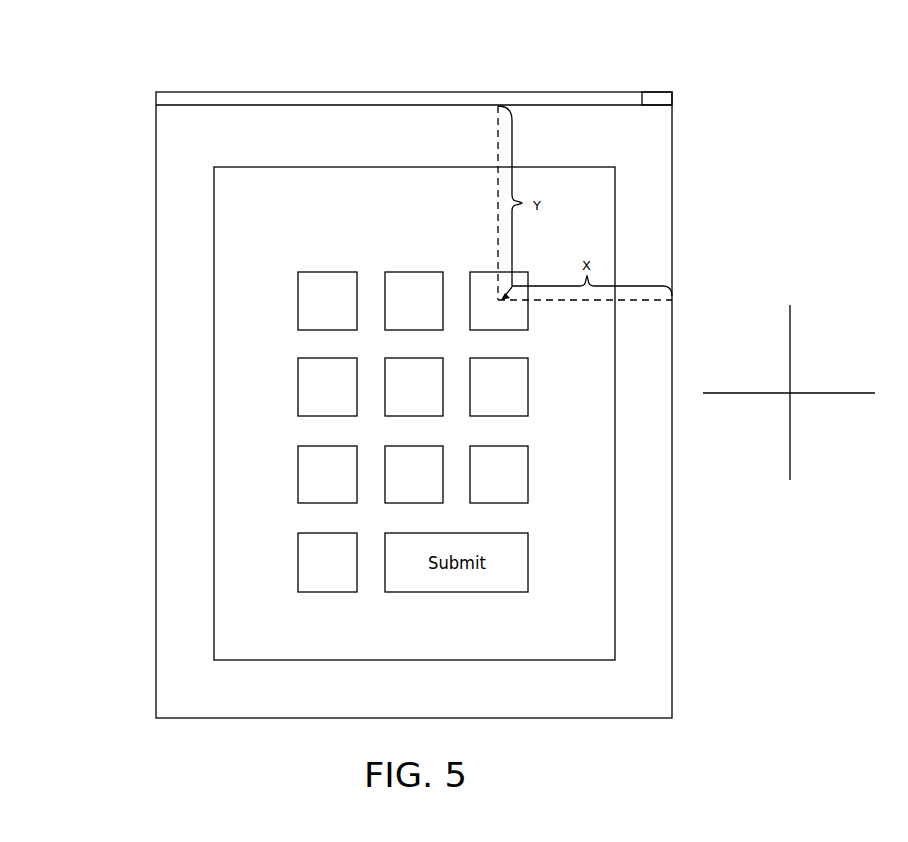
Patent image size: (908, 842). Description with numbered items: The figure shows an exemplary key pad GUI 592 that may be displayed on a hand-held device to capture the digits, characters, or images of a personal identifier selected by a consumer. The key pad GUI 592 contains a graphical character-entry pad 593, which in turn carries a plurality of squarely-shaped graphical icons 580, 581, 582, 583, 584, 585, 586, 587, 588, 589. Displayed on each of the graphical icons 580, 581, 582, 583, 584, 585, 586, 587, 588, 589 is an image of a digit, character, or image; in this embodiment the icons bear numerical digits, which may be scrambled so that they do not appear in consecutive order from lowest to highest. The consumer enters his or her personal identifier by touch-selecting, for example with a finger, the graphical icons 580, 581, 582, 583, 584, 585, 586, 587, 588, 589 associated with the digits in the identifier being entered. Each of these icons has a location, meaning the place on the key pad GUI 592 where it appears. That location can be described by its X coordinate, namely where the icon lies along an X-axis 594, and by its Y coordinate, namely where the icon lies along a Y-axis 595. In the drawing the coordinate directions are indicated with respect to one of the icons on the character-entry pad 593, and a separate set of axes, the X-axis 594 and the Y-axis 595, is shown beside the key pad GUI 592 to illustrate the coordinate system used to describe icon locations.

The key pad GUI 592 is at (617, 75).
The graphical character-entry pad 593 is at (545, 167).
The graphical icon 580 is at (310, 272).
The graphical icon 581 is at (395, 272).
The graphical icon 582 is at (482, 272).
The graphical icon 583 is at (310, 358).
The graphical icon 584 is at (395, 358).
The graphical icon 585 is at (482, 358).
The graphical icon 586 is at (310, 446).
The graphical icon 587 is at (395, 446).
The graphical icon 588 is at (482, 446).
The graphical icon 589 is at (314, 533).
The X-axis 594 is at (789, 334).
The Y-axis 595 is at (803, 392).